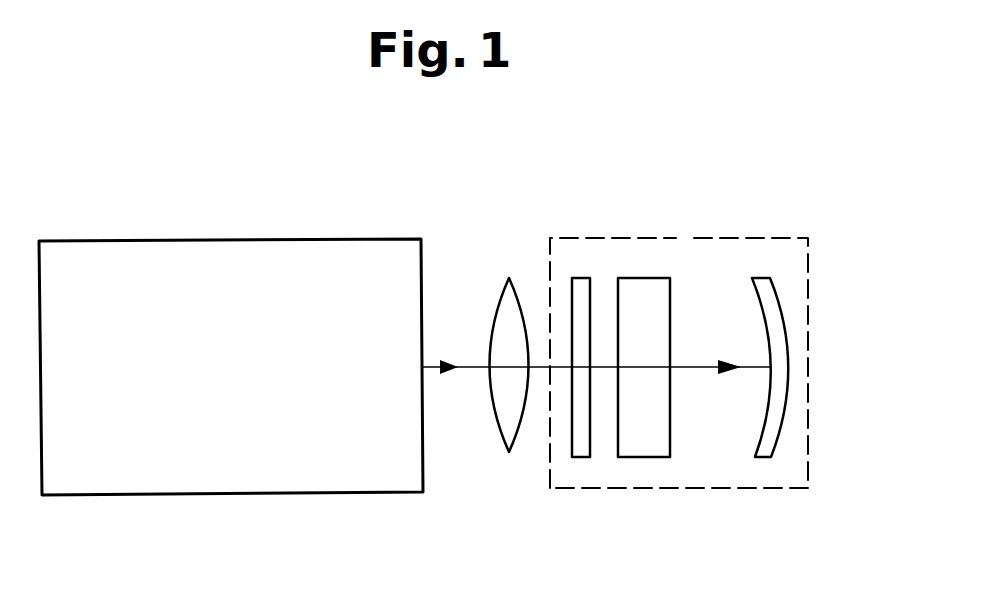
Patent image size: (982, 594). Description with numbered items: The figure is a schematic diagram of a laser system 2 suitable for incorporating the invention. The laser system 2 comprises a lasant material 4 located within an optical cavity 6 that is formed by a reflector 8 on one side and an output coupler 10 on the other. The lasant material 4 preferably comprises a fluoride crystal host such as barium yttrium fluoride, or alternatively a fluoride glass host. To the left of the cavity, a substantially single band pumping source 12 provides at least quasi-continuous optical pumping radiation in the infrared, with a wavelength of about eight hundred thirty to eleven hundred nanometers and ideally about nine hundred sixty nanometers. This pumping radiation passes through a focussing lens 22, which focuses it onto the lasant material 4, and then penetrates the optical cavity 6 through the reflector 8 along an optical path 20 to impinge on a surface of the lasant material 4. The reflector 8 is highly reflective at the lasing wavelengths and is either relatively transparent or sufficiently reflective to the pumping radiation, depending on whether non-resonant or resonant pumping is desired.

The laser system 2 is at (770, 185).
The lasant material 4 is at (633, 287).
The optical cavity 6 is at (680, 237).
The reflector 8 is at (578, 283).
The output coupler 10 is at (762, 282).
The pumping source 12 is at (185, 240).
The optical path 20 is at (480, 372).
The focussing lens 22 is at (505, 305).